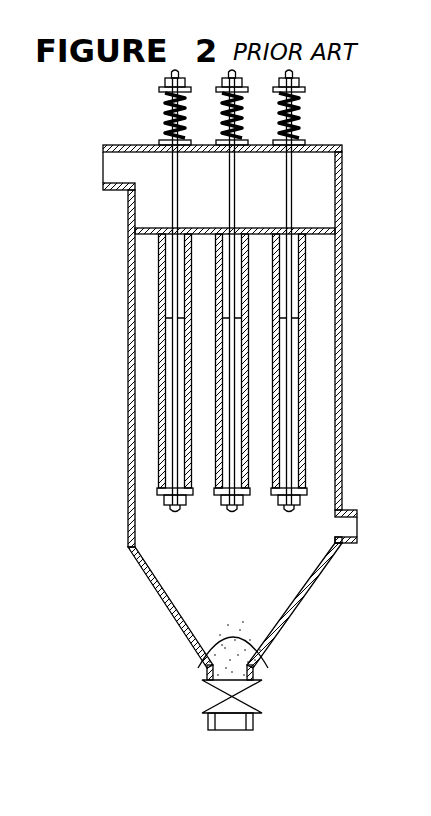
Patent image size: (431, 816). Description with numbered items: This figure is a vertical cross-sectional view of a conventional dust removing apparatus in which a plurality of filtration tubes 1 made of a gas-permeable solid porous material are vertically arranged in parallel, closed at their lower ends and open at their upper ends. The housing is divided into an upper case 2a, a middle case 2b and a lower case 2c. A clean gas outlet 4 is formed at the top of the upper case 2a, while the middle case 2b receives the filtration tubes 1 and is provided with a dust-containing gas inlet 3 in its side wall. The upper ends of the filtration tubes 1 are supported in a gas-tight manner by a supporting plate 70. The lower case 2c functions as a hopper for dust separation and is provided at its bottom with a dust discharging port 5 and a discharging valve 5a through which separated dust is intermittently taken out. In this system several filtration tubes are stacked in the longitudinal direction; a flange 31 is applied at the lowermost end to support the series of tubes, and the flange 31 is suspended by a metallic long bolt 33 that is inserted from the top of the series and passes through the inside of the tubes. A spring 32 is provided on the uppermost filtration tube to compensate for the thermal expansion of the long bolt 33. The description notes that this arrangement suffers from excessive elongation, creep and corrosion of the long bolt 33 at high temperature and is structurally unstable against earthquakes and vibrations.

The filtration tube 1 is at (303, 278).
The upper case 2a is at (343, 199).
The middle case 2b is at (336, 375).
The lower case 2c is at (292, 608).
The dust-containing gas inlet 3 is at (350, 526).
The clean gas outlet 4 is at (112, 191).
The dust discharging port 5 is at (255, 675).
The discharging valve 5a is at (245, 700).
The flange 31 is at (310, 490).
The spring 32 is at (298, 104).
The long bolt 33 is at (288, 170).
The supporting plate 70 is at (313, 227).